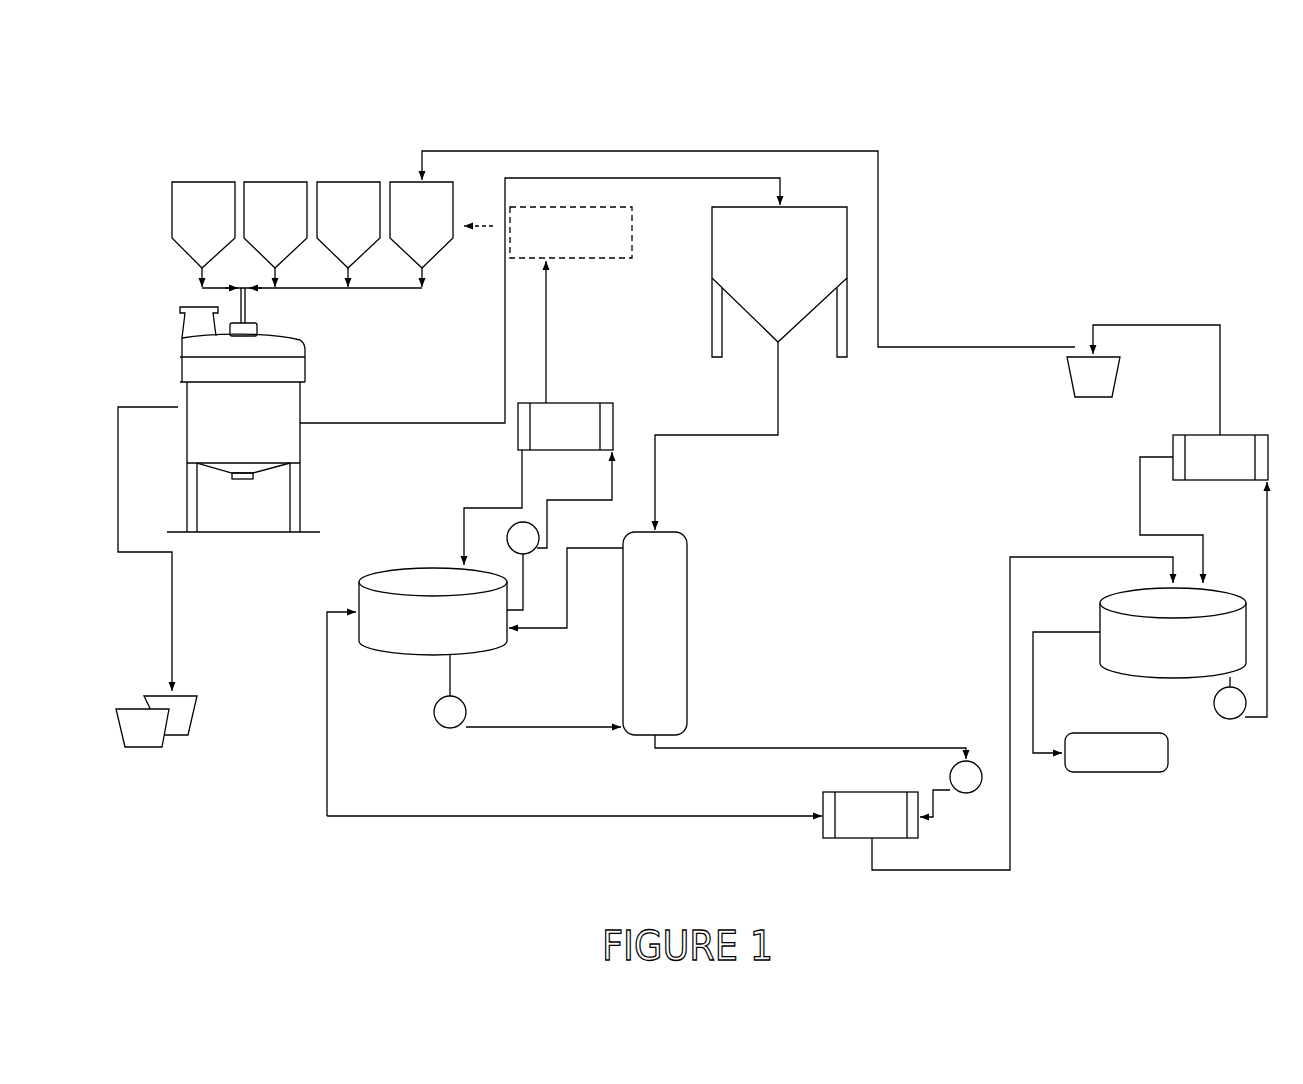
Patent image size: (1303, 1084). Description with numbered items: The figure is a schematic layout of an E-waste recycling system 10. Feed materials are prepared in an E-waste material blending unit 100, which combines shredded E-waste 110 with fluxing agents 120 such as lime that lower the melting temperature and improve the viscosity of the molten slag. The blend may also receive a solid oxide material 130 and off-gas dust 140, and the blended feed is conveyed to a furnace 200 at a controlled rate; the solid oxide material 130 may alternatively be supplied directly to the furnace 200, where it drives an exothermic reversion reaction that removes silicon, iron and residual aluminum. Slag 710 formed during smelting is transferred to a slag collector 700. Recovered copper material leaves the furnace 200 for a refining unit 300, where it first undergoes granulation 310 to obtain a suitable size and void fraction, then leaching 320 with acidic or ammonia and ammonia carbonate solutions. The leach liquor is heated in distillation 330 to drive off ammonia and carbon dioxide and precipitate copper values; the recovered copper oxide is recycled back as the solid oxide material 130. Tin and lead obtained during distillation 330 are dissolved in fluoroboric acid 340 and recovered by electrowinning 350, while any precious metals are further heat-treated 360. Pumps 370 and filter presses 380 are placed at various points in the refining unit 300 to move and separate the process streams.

The E-waste recycling system 10 is at (1052, 176).
The E-waste material blending unit 100 is at (147, 175).
The E-waste 110 is at (202, 172).
The fluxing agents 120 is at (273, 172).
The solid oxide material 130 is at (407, 172).
The off-gas dust 140 is at (352, 172).
The furnace 200 is at (177, 333).
The refining unit 300 is at (943, 304).
The granulation 310 is at (712, 260).
The leaching 320 is at (687, 595).
The distillation 330 is at (417, 568).
The fluoroboric acid 340 is at (1170, 677).
The electrowinning 350 is at (1112, 773).
The heat treatment 360 is at (1068, 378).
The pumps 370 is at (445, 728).
The filter presses 380 is at (1173, 440).
The slag collector 700 is at (178, 746).
The slag 710 is at (140, 707).